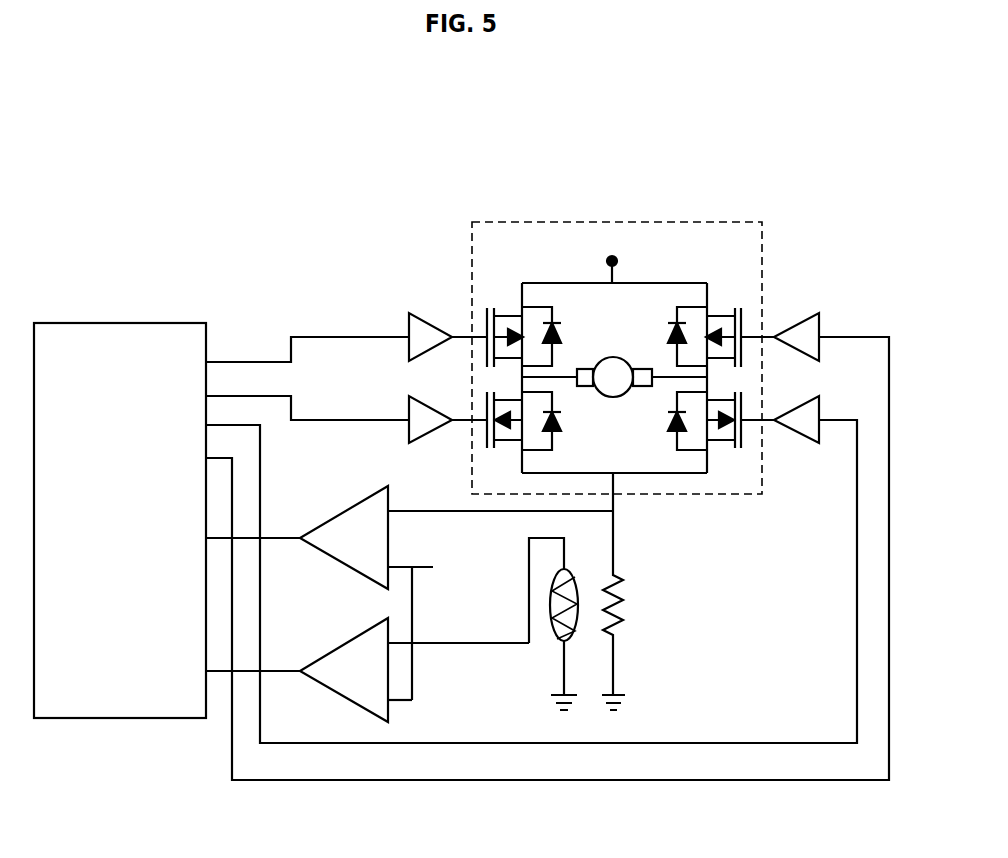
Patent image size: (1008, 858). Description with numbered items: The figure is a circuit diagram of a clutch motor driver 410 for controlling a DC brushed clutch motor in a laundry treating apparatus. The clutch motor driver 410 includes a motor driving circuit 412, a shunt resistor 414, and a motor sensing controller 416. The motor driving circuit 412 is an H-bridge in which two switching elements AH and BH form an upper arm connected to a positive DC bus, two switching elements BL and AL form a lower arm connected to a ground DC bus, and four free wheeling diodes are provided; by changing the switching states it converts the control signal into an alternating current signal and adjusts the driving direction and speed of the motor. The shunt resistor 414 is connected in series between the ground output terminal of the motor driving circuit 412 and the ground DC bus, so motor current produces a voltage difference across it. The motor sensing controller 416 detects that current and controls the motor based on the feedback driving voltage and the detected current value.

The clutch motor driver 410 is at (153, 133).
The motor driving circuit 412 is at (616, 222).
The shunt resistor 414 is at (555, 640).
The motor sensing controller 416 is at (121, 323).